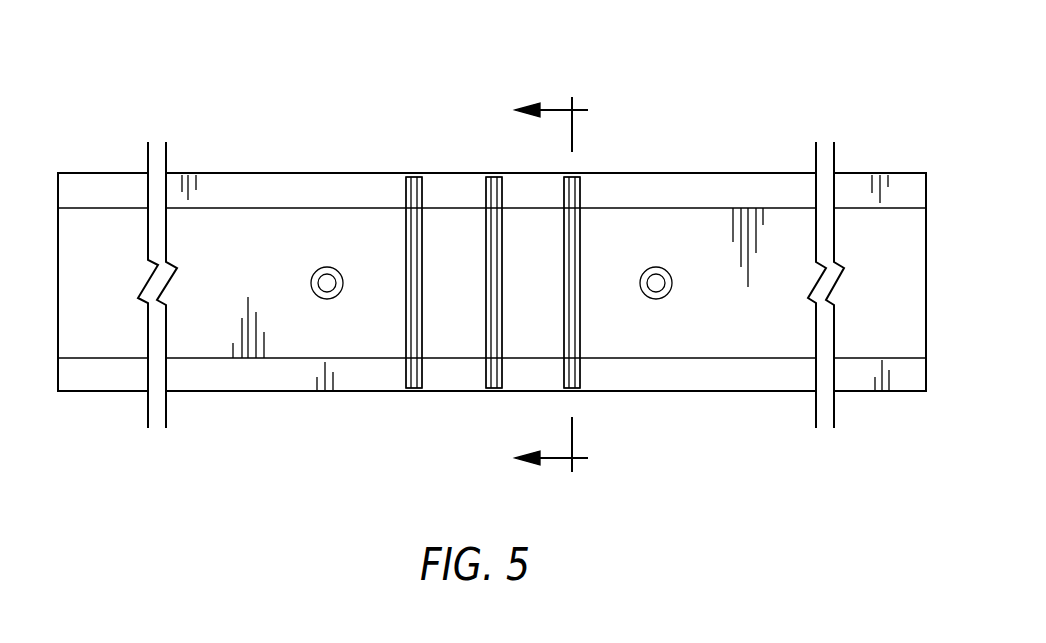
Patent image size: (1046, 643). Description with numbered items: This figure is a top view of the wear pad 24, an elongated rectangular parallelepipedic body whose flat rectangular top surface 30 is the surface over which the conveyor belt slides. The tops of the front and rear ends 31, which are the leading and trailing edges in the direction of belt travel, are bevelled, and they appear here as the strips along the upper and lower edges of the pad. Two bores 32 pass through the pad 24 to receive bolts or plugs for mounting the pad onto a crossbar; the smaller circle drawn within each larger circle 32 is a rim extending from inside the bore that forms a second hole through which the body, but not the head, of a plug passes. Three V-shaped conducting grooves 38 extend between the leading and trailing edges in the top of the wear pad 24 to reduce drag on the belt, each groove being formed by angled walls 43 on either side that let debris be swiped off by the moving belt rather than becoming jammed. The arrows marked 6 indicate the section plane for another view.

The wear pad 24 is at (929, 175).
The top surface 30 is at (229, 229).
The front and rear ends 31 is at (665, 187).
The bores 32 is at (322, 263).
The V-shaped conducting grooves 38 is at (572, 372).
The angled walls 43 is at (407, 178).
The section line 6- 6 is at (558, 285).